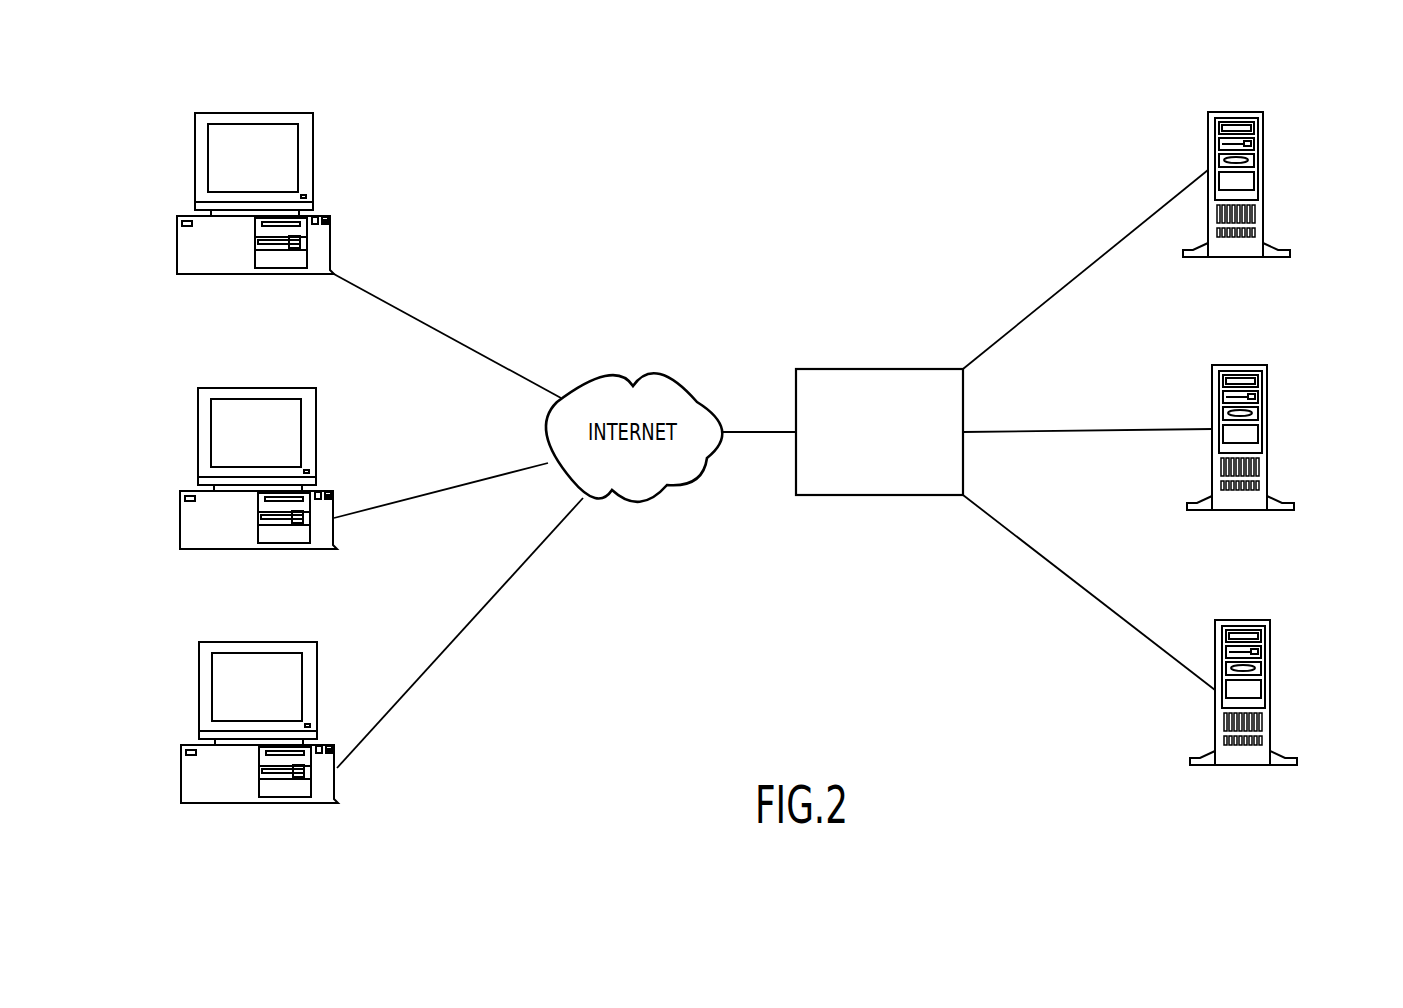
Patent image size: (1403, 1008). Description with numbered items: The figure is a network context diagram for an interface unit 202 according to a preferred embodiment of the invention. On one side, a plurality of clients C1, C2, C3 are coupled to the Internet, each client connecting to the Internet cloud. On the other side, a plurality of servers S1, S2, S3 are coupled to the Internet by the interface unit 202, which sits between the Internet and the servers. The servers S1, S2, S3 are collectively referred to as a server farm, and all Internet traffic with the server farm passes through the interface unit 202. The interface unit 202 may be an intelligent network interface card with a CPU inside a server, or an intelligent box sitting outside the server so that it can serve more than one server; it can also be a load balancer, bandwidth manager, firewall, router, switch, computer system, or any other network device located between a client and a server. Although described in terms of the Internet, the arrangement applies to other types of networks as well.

The interface unit 202 is at (877, 369).
The client C1 is at (199, 676).
The client C2 is at (198, 452).
The client C3 is at (195, 180).
The server S1 is at (1265, 177).
The server S2 is at (1269, 438).
The server S3 is at (1270, 678).